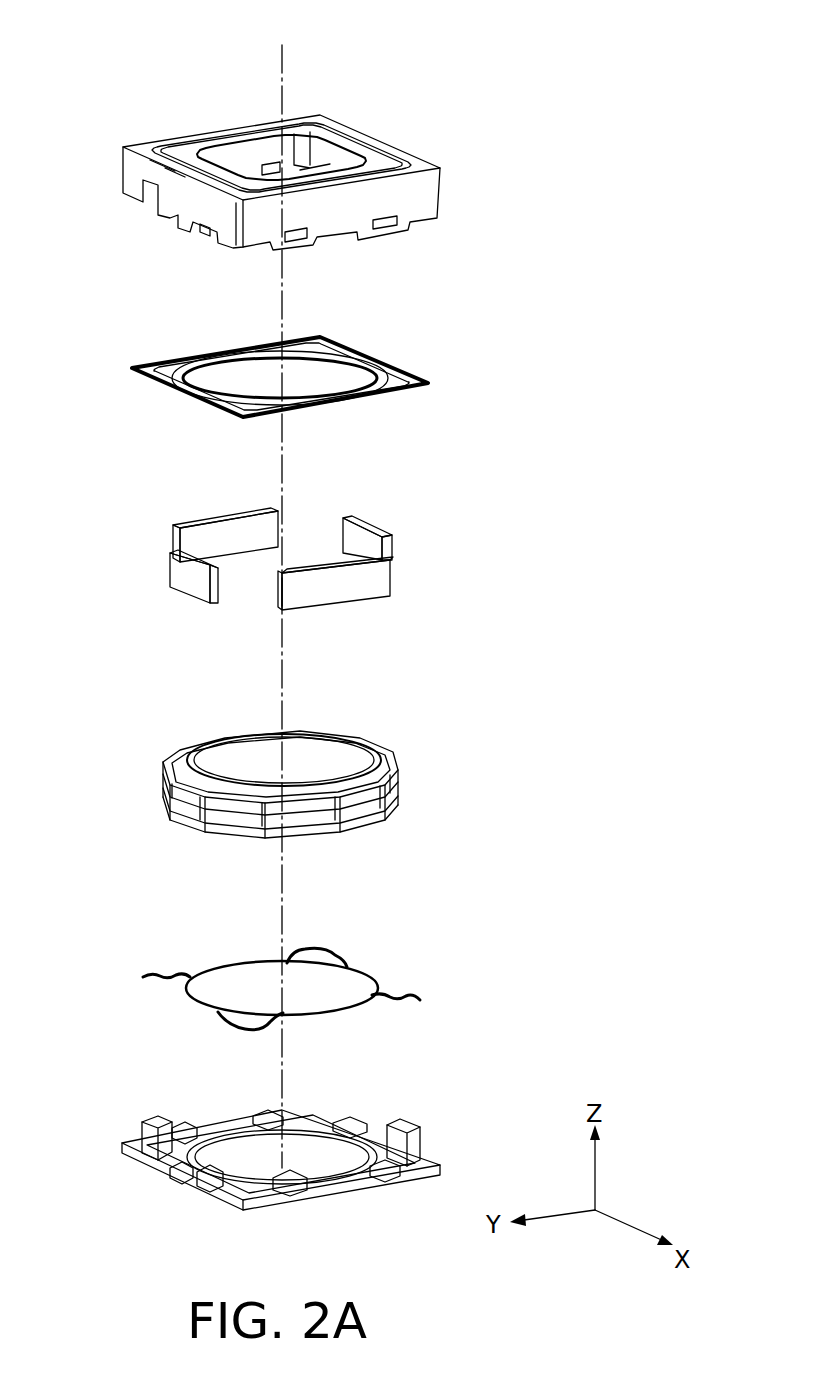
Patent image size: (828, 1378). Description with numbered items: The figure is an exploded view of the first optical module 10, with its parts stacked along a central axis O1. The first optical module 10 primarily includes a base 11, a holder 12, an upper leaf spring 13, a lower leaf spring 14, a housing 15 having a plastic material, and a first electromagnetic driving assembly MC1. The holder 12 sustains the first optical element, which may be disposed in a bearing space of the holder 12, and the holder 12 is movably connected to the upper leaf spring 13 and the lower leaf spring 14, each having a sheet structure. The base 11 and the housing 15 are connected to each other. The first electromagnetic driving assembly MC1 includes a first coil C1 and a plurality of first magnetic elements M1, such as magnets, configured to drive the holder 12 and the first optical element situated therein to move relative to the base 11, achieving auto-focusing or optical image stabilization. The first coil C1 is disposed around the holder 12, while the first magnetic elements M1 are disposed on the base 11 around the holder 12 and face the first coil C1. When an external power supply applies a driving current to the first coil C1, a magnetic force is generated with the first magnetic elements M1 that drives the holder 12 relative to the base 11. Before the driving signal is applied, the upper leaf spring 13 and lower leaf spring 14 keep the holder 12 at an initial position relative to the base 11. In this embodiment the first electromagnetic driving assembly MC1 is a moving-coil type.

The first optical module 10 is at (122, 72).
The optical axis O1 is at (280, 591).
The housing 15 is at (431, 193).
The upper leaf spring 13 is at (390, 370).
The first magnetic element M1 is at (178, 575).
The first electromagnetic driving assembly MC1 is at (593, 652).
The first coil C1 is at (400, 782).
The holder 12 is at (237, 753).
The lower leaf spring 14 is at (375, 983).
The base 11 is at (433, 1153).